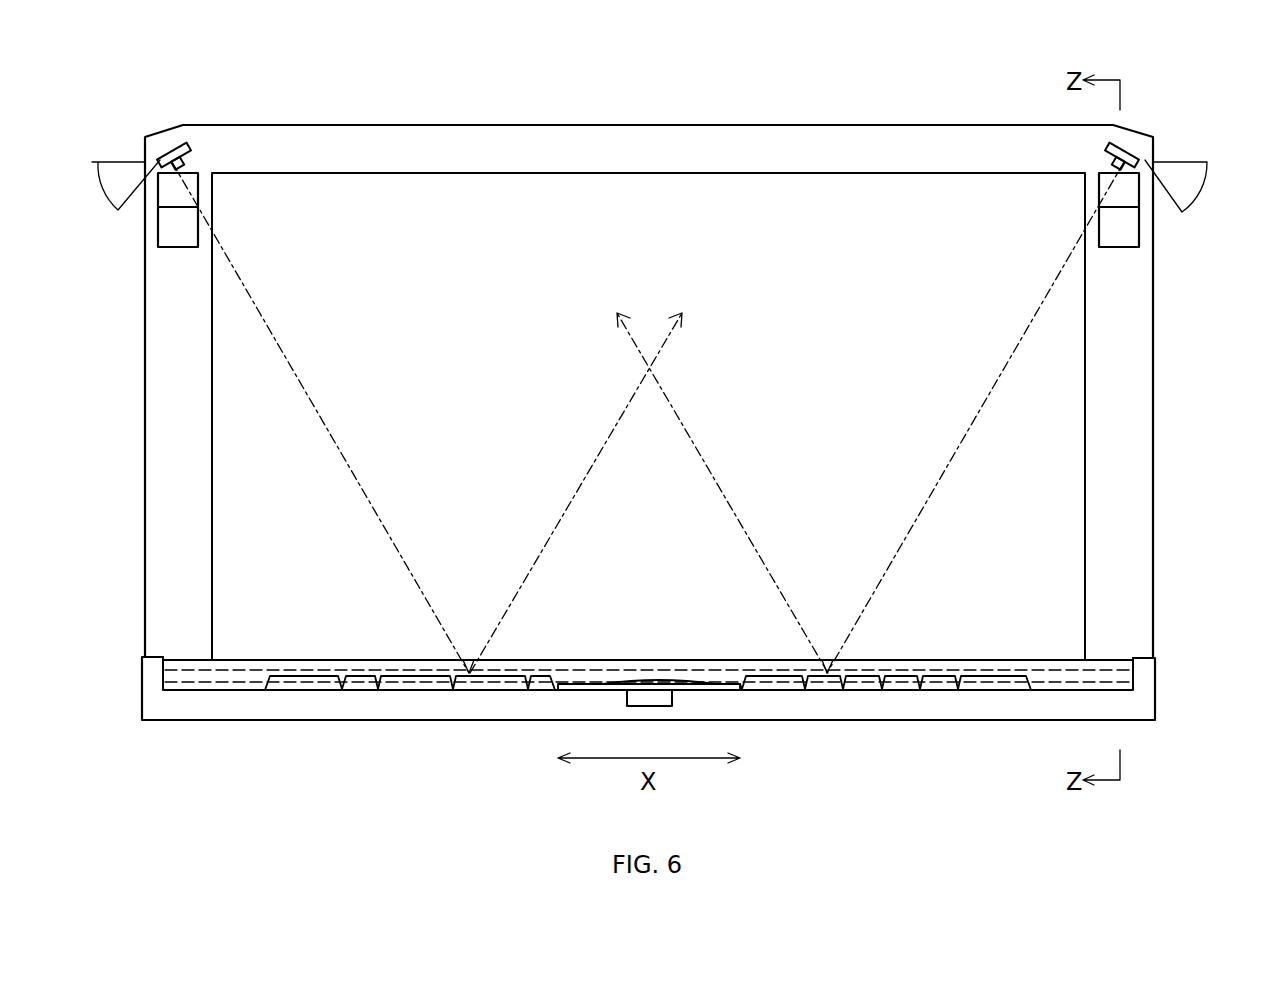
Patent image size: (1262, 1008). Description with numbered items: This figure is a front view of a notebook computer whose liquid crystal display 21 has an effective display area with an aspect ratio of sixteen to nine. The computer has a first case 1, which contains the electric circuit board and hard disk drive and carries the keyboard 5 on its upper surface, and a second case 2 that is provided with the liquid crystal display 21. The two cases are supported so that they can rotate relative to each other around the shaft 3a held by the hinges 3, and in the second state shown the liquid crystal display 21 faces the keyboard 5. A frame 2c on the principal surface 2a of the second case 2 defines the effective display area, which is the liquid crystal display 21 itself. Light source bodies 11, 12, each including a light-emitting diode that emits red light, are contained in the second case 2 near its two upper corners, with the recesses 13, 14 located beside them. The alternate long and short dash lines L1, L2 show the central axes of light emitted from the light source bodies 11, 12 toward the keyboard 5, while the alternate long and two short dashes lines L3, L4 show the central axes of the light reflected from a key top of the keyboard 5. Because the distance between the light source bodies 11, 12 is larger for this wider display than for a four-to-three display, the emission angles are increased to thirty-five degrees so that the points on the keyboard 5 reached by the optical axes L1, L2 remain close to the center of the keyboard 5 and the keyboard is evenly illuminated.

The first case 1 is at (1145, 708).
The second case 2 is at (793, 125).
The principal surface 2a is at (449, 148).
The frame 2c is at (530, 137).
The liquid crystal display 21 is at (642, 200).
The hinge 3 is at (1145, 677).
The shaft 3a is at (1093, 668).
The keyboard 5 is at (1000, 673).
The light source body 11 is at (147, 137).
The light source body 12 is at (1125, 150).
The recess 13 is at (173, 228).
The recess 14 is at (1128, 228).
The optical axis L1 is at (337, 457).
The optical axis L2 is at (1005, 377).
The optical axis L3 is at (620, 415).
The optical axis L4 is at (672, 405).